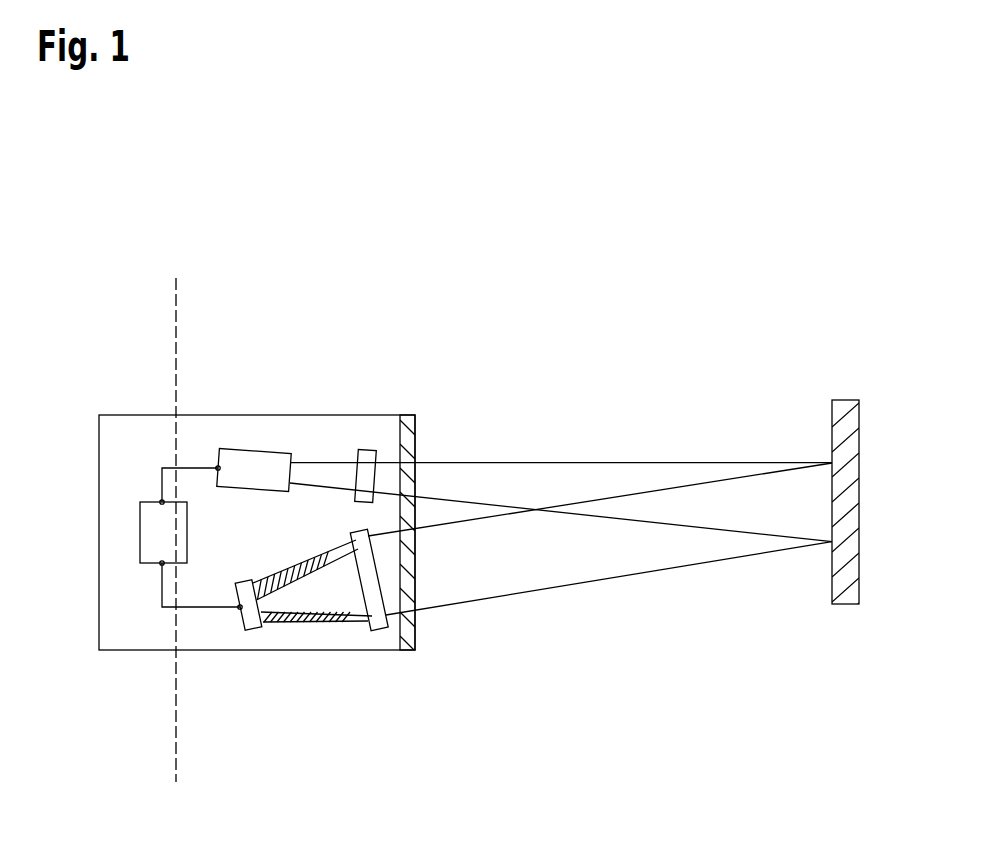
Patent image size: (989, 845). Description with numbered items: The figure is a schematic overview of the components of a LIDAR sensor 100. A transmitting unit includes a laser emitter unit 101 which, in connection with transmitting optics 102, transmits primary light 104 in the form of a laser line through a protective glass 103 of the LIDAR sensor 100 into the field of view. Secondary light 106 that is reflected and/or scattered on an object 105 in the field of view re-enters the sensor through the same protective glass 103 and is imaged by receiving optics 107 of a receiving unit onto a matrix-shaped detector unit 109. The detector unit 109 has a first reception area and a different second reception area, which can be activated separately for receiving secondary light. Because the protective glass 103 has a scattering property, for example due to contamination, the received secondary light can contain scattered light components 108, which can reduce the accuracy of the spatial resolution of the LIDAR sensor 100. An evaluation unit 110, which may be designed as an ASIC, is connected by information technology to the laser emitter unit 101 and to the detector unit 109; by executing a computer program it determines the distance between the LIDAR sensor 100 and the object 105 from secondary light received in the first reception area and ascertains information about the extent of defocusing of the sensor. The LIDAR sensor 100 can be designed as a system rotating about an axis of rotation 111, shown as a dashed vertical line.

The LIDAR sensor 100 is at (736, 306).
The laser emitter unit 101 is at (259, 453).
The transmitting optics 102 is at (368, 450).
The protective glass 103 is at (413, 415).
The primary light 104 is at (507, 463).
The object 105 is at (843, 603).
The secondary light 106 is at (553, 590).
The receiving optics 107 is at (383, 631).
The scattered light components 108 is at (283, 583).
The detector unit 109 is at (255, 630).
The evaluation unit 110 is at (140, 533).
The axis of rotation 111 is at (175, 302).